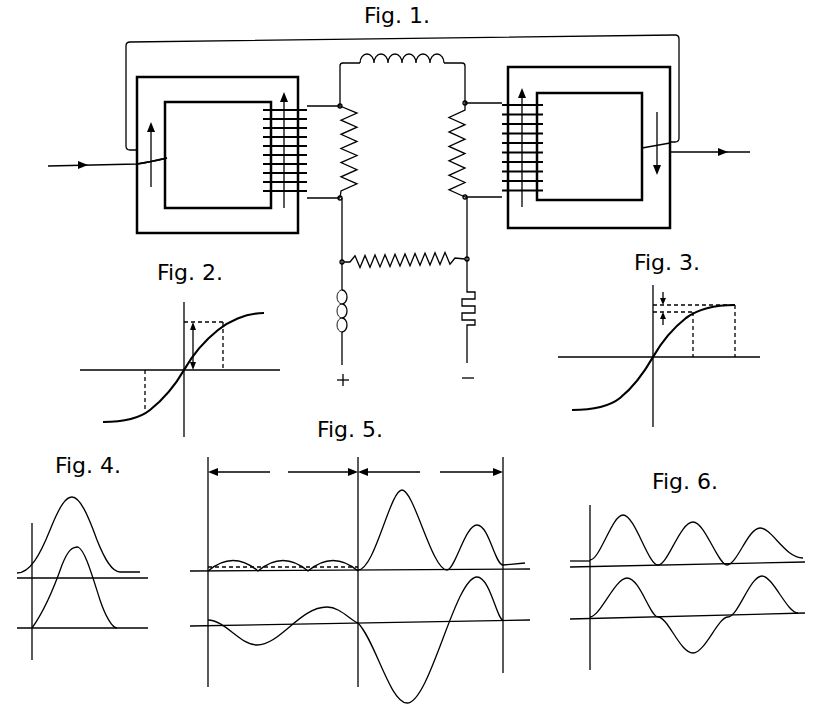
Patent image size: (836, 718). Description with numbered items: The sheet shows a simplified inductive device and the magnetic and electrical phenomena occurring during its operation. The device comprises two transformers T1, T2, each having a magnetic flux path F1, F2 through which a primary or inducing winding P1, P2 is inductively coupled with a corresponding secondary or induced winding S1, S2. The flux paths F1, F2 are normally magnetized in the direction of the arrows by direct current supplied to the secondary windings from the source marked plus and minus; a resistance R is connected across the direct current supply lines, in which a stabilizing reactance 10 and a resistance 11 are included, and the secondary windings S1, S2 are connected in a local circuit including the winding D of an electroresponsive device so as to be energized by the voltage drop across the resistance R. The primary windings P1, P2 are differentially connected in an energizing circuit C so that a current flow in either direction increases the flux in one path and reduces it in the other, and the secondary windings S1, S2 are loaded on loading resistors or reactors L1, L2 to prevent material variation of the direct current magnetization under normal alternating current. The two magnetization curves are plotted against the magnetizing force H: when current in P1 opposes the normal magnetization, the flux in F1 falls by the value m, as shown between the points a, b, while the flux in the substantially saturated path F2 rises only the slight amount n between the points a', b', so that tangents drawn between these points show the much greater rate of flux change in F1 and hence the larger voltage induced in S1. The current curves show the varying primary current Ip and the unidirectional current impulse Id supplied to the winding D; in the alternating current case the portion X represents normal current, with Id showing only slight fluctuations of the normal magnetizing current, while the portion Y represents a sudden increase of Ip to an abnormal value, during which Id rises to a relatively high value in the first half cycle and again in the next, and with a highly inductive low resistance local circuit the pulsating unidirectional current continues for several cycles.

In FIG. 1, the transformer T1 is at (217, 141).
In FIG. 1, the transformer T2 is at (589, 136).
In FIG. 1, the magnetic flux path F1 is at (218, 145).
In FIG. 1, the magnetic flux path F2 is at (589, 137).
In FIG. 1, the primary winding P1 is at (168, 158).
In FIG. 1, the primary winding P2 is at (640, 148).
In FIG. 1, the secondary winding S1 is at (263, 152).
In FIG. 1, the secondary winding S2 is at (543, 155).
In FIG. 1, the loading resistor L1 is at (352, 160).
In FIG. 1, the loading resistor L2 is at (455, 122).
In FIG. 1, the winding of electroresponsive device D is at (405, 66).
In FIG. 1, the resistance R is at (392, 255).
In FIG. 1, the energizing circuit C is at (736, 152).
In FIG. 1, the stabilizing reactance 10 is at (352, 308).
In FIG. 1, the resistance 11 is at (460, 310).
In FIG. 2, the magnetizing force axis H is at (188, 370).
In FIG. 3, the magnetizing force axis H is at (651, 358).
In FIG. 2, the point on magnetization curve a is at (214, 346).
In FIG. 2, the point on magnetization curve b is at (171, 391).
In FIG. 2, the flux decrease m is at (193, 346).
In FIG. 3, the point on magnetization curve a' is at (684, 333).
In FIG. 3, the point on magnetization curve b' is at (699, 321).
In FIG. 3, the flux increase n is at (667, 309).
In FIG. 4, the current curve of winding D Id is at (97, 538).
In FIG. 5, the current curve of winding D Id is at (332, 562).
In FIG. 4, the primary current curve Ip is at (105, 604).
In FIG. 5, the primary current curve Ip is at (328, 606).
In FIG. 5, the normal current portion of curve X is at (283, 473).
In FIG. 5, the abnormal current portion of curve Y is at (430, 472).